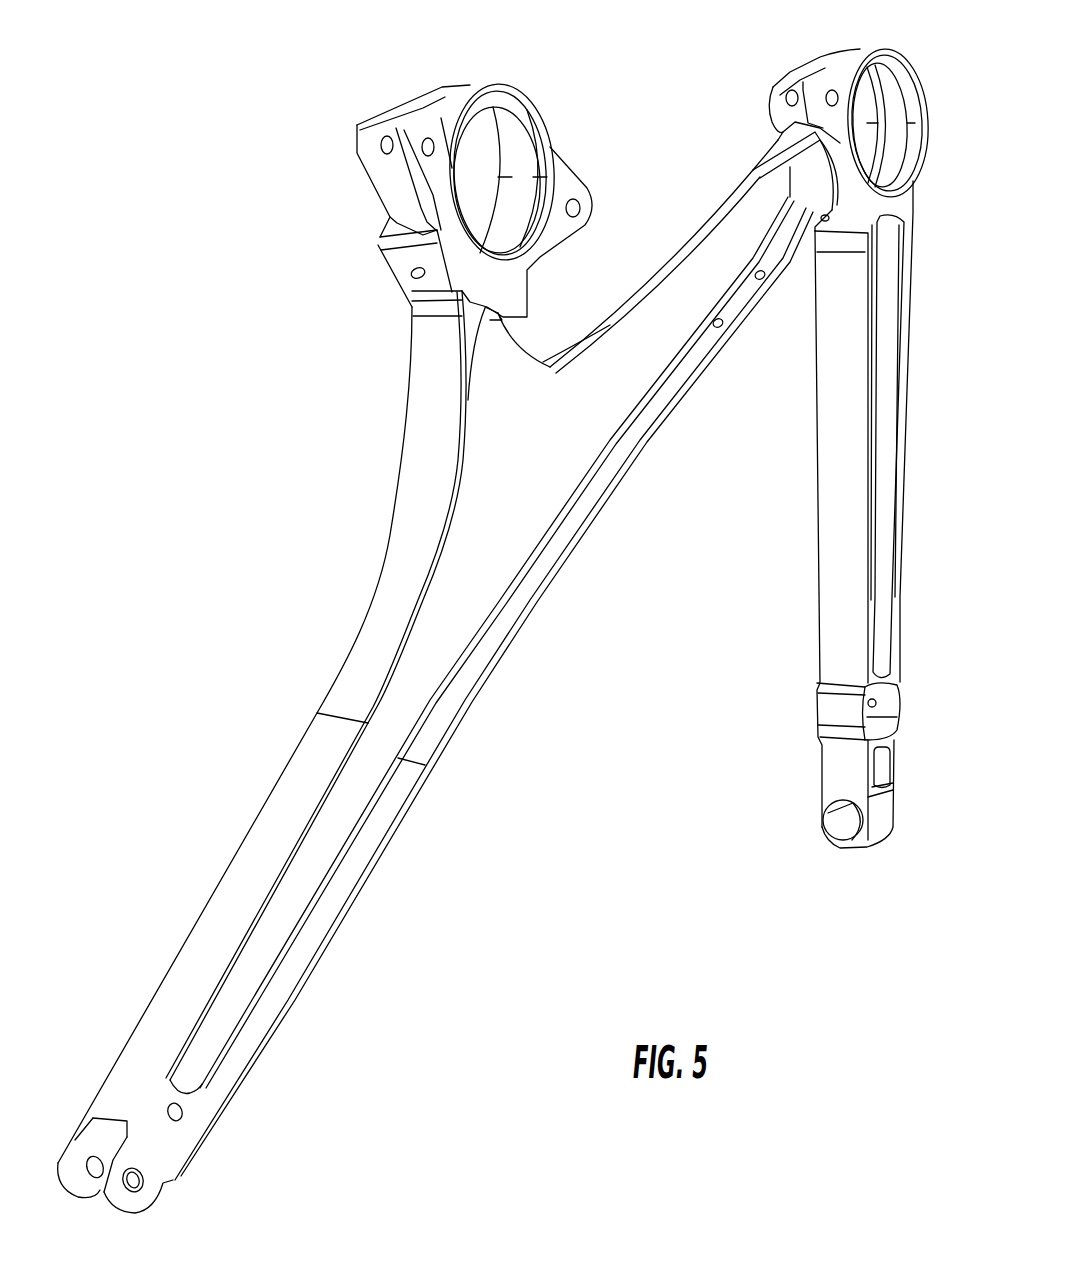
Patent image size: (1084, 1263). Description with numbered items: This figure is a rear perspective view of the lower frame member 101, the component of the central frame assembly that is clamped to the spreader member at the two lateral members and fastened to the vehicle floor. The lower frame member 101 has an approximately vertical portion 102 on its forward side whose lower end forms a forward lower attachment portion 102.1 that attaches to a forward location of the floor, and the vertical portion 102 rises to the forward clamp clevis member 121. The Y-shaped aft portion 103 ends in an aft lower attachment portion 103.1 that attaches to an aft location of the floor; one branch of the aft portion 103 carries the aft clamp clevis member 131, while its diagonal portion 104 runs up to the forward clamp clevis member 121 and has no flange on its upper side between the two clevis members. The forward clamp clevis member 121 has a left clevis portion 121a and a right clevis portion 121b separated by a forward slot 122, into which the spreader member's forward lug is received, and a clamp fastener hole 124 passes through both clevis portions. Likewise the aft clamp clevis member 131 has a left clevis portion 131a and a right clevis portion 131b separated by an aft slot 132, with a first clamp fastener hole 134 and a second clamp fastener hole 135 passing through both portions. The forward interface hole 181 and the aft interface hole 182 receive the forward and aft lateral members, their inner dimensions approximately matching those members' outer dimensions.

The lower frame member 101 is at (153, 86).
The vertical portion 102 is at (830, 580).
The forward lower attachment portion 102.1 is at (832, 780).
The aft portion 103 is at (257, 843).
The aft lower attachment portion 103.1 is at (113, 1087).
The diagonal portion 104 is at (664, 398).
The forward clamp clevis member 121 is at (782, 133).
The left clevis portion 121a is at (817, 63).
The right clevis portion 121b is at (902, 80).
The forward slot 122 is at (871, 373).
The clamp fastener hole 124 is at (788, 94).
The aft clamp clevis member 131 is at (403, 270).
The left clevis portion 131a is at (358, 158).
The right clevis portion 131b is at (527, 104).
The aft slot 132 is at (403, 198).
The first clamp fastener hole 134 is at (573, 199).
The second clamp fastener hole 135 is at (385, 137).
The forward interface hole 181 is at (862, 137).
The aft interface hole 182 is at (473, 195).